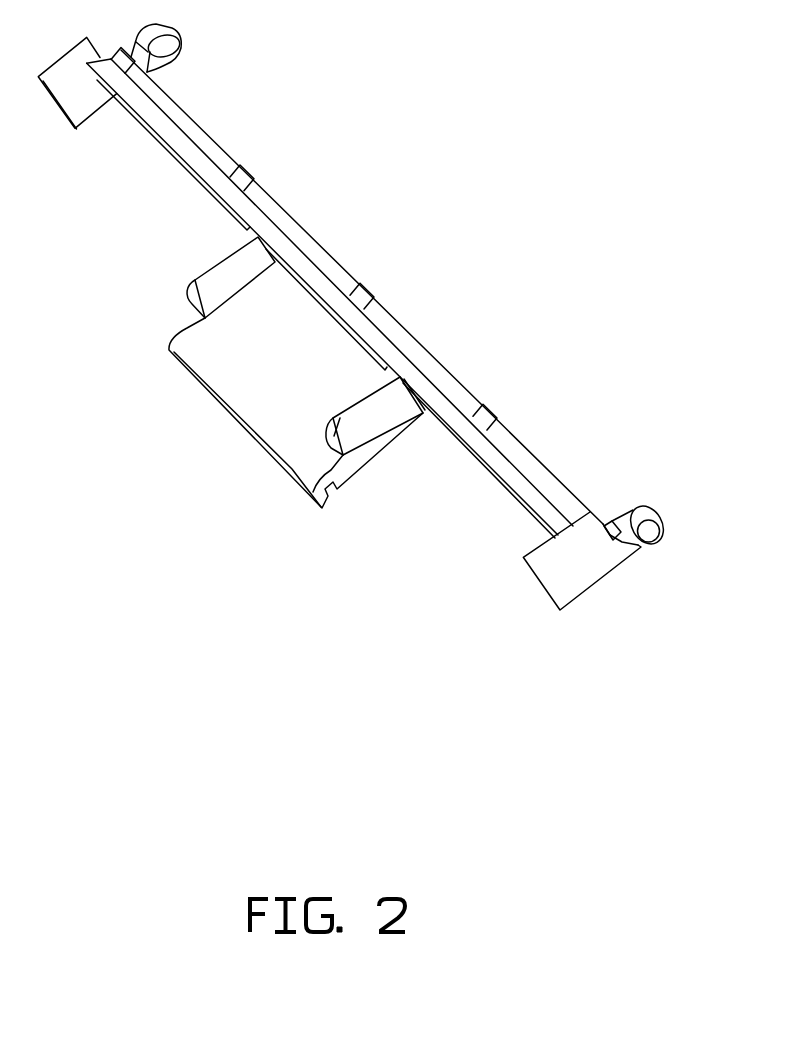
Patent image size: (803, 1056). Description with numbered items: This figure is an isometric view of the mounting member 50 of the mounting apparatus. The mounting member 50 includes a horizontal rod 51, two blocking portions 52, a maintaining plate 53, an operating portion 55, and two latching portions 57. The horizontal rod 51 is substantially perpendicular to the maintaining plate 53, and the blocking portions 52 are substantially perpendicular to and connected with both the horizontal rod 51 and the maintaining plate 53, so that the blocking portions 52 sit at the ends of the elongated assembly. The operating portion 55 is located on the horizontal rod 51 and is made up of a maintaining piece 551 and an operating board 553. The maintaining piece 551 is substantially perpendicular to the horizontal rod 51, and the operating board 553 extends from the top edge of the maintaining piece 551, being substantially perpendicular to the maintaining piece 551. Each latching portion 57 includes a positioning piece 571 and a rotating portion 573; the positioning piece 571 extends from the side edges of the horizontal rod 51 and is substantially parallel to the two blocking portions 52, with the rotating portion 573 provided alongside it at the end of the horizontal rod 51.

The mounting member 50 is at (497, 219).
The horizontal rod 51 is at (179, 145).
The blocking portion 52 is at (553, 570).
The maintaining plate 53 is at (426, 363).
The operating portion 55 is at (77, 302).
The maintaining piece 551 is at (211, 297).
The operating board 553 is at (225, 367).
The latching portion 57 is at (743, 425).
The positioning piece 571 is at (626, 521).
The rotating portion 573 is at (660, 532).